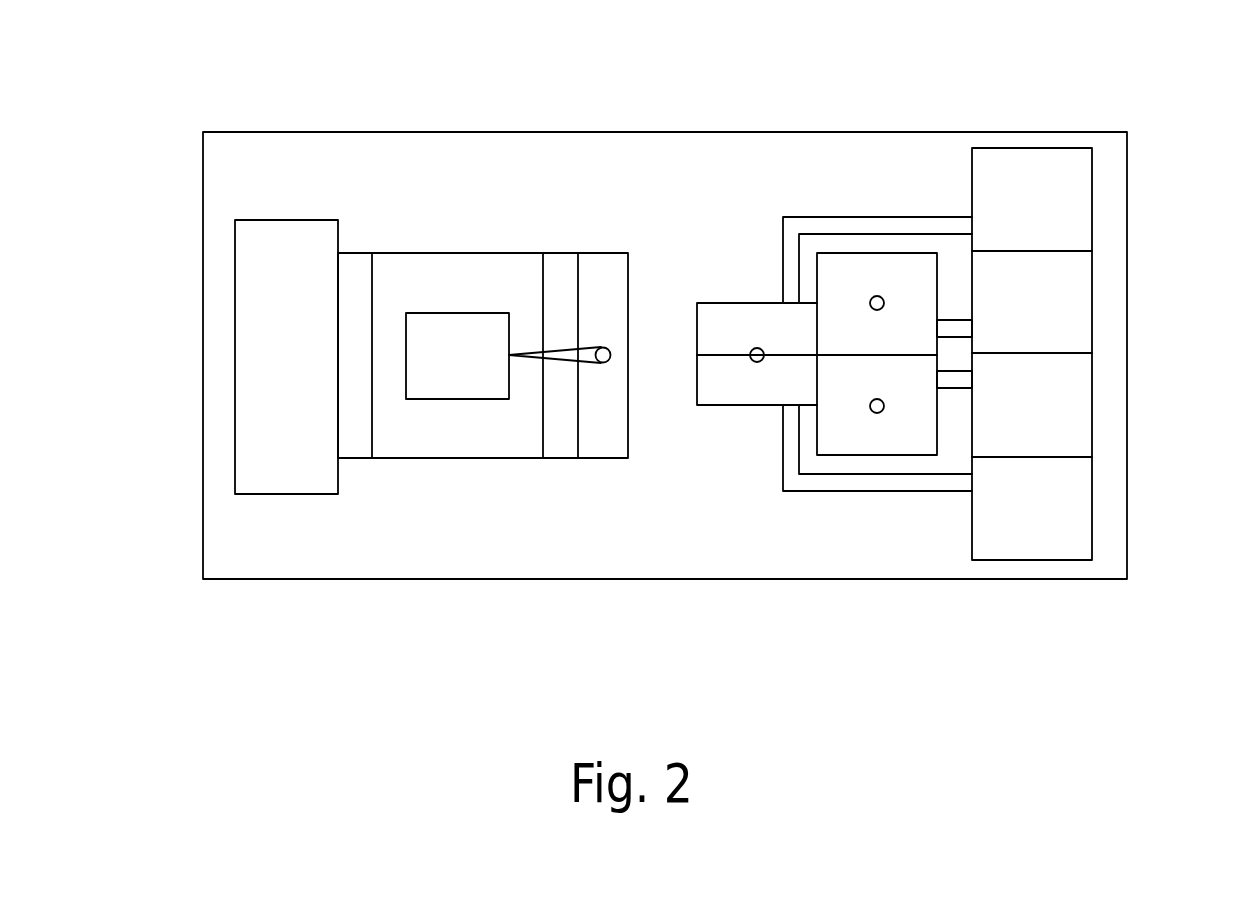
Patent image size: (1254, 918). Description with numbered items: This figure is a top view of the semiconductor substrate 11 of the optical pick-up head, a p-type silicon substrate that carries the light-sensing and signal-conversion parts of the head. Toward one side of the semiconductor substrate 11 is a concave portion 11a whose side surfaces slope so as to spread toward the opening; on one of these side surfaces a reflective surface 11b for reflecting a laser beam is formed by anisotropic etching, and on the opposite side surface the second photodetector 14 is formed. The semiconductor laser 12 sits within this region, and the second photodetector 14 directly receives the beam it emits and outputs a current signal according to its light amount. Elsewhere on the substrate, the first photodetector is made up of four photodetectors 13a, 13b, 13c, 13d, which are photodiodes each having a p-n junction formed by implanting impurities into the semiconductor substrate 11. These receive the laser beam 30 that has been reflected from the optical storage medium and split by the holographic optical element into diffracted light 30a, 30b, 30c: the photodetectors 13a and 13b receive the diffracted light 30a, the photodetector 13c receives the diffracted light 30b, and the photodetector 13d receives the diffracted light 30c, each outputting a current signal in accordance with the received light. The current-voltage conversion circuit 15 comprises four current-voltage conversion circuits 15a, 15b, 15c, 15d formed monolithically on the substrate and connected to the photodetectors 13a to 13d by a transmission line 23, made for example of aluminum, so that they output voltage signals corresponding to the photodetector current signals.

The semiconductor substrate 11 is at (1040, 132).
The concave portion 11a is at (458, 286).
The reflective surface 11b is at (600, 423).
The semiconductor laser 12 is at (474, 323).
The photodetector 13a is at (732, 317).
The photodetector 13b is at (749, 390).
The photodetector 13c is at (866, 267).
The photodetector 13d is at (867, 440).
The second photodetector 14 is at (286, 237).
The current-voltage conversion circuit 15 is at (1195, 182).
The current-voltage conversion circuit 15a is at (1075, 200).
The current-voltage conversion circuit 15b is at (1075, 303).
The current-voltage conversion circuit 15c is at (1075, 404).
The current-voltage conversion circuit 15d is at (1075, 507).
The transmission line 23 is at (798, 226).
The laser beam 30 is at (603, 348).
The diffracted light 30a is at (751, 360).
The diffracted light 30b is at (878, 296).
The diffracted light 30c is at (880, 413).